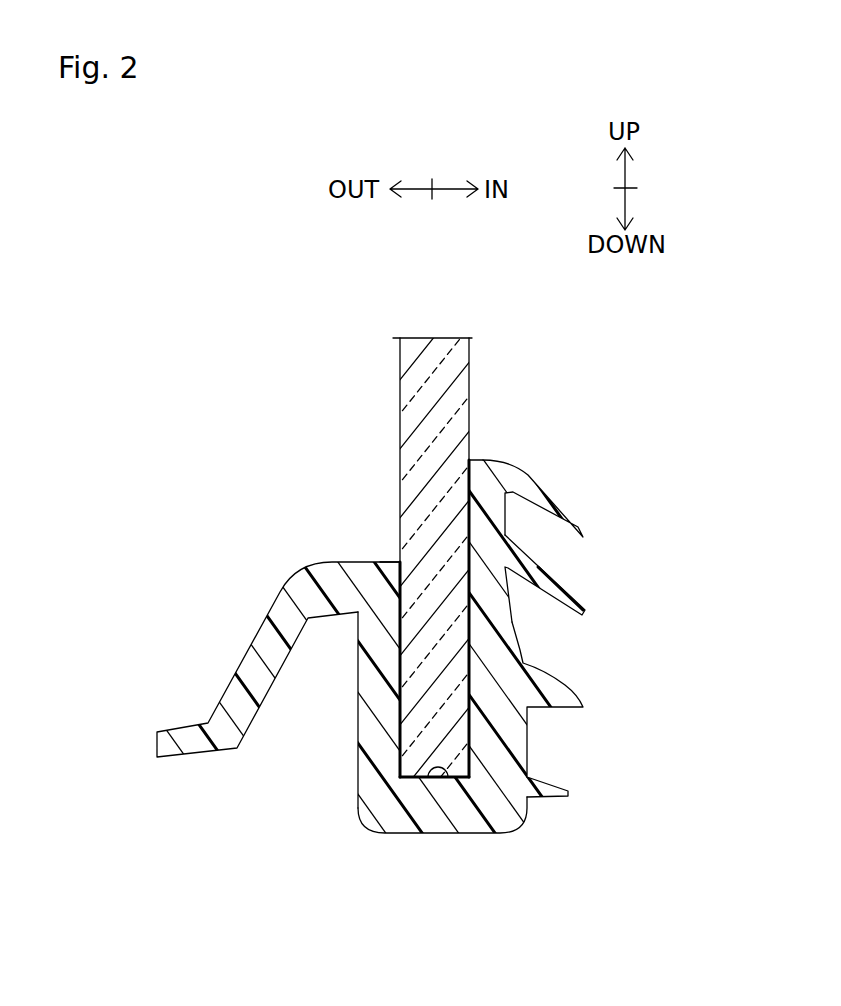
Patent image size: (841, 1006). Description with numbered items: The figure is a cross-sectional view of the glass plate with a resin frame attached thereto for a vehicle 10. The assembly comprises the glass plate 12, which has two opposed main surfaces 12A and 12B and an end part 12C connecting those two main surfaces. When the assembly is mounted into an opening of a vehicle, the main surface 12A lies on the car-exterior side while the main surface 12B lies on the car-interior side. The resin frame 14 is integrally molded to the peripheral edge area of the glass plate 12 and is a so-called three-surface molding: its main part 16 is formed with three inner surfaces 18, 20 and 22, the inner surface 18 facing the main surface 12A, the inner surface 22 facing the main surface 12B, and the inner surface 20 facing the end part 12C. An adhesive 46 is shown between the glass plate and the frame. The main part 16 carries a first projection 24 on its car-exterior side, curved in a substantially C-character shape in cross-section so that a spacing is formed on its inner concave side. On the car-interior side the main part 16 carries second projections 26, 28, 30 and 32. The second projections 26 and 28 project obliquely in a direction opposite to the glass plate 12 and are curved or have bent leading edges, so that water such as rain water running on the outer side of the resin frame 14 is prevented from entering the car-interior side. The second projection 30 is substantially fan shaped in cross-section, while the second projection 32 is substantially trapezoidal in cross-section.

The glass plate with a resin frame attached thereto for a vehicle 10 is at (449, 124).
The glass plate 12 is at (471, 328).
The main surface 12A is at (400, 383).
The main surface 12B is at (470, 384).
The end part 12C is at (413, 783).
The resin frame 14 is at (417, 886).
The main part 16 is at (508, 824).
The inner surface 18 is at (402, 569).
The inner surface 20 is at (450, 777).
The inner surface 22 is at (469, 471).
The first projection 24 is at (250, 662).
The second projection 26 is at (578, 526).
The second projection 28 is at (580, 609).
The second projection 30 is at (568, 700).
The second projection 32 is at (568, 791).
The adhesive 46 is at (400, 660).